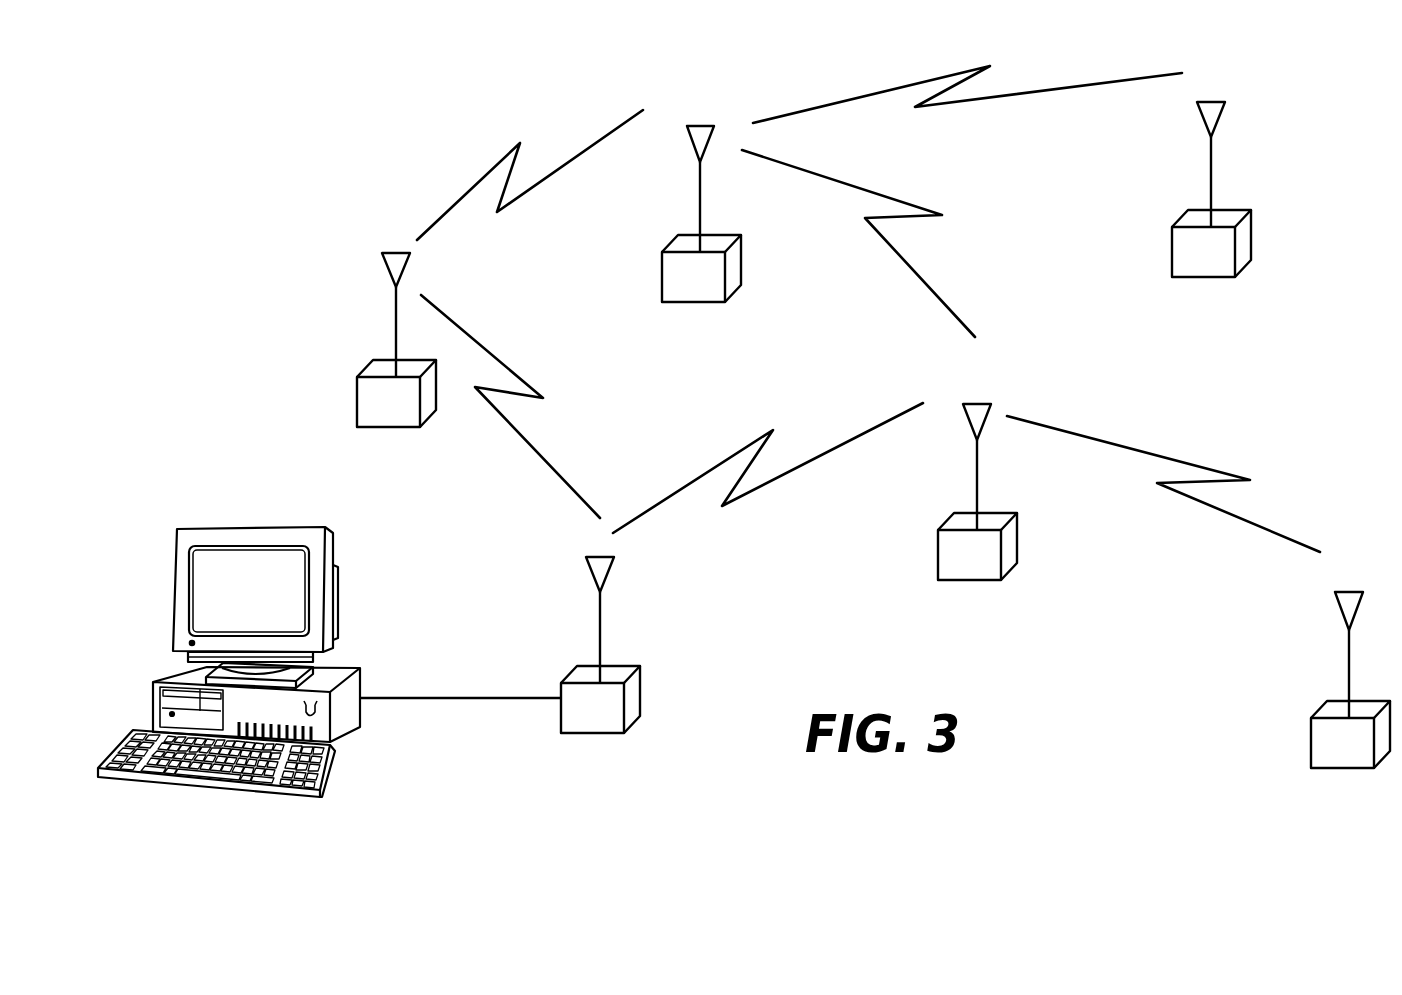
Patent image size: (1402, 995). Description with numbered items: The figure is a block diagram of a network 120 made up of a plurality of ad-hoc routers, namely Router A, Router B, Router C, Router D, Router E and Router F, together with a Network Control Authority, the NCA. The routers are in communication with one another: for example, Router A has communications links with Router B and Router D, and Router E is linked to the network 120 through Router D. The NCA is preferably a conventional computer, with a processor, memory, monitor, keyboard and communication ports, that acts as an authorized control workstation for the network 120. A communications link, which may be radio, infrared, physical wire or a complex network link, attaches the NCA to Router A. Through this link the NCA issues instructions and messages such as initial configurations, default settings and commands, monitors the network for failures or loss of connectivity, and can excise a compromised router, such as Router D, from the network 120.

The network 120 is at (398, 141).
The Router A is at (500, 665).
The Router B is at (396, 358).
The Router C is at (688, 214).
The Router D is at (977, 511).
The Router E is at (1330, 680).
The Router F is at (1229, 189).
The Network Control Authority NCA is at (251, 662).